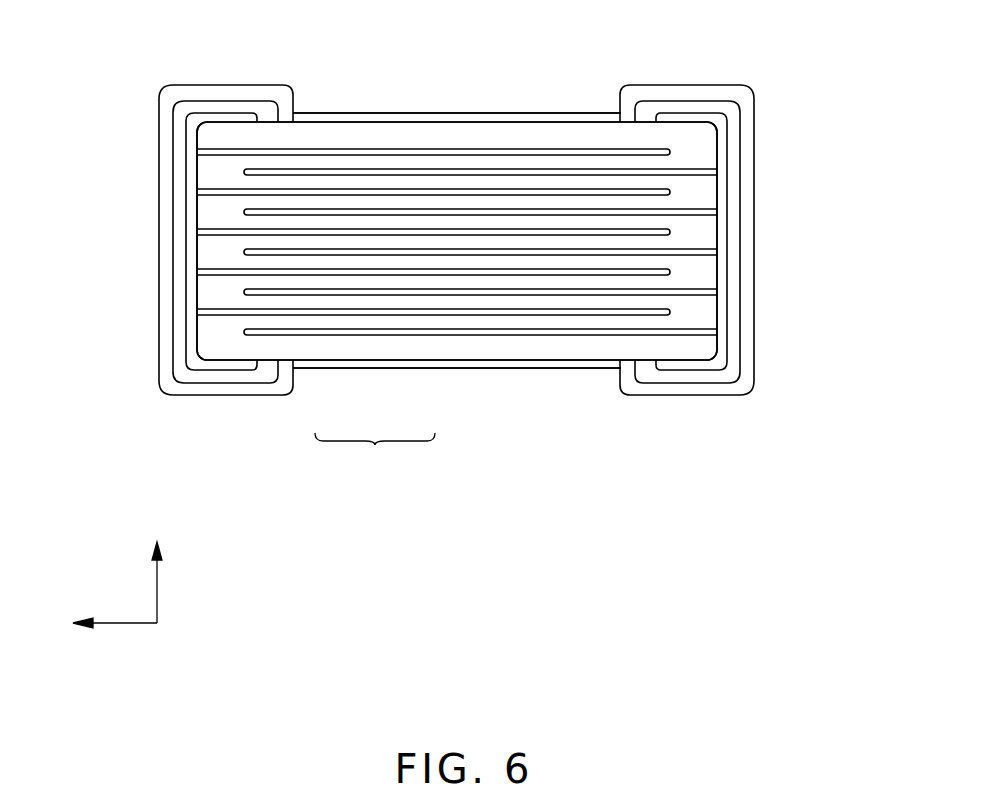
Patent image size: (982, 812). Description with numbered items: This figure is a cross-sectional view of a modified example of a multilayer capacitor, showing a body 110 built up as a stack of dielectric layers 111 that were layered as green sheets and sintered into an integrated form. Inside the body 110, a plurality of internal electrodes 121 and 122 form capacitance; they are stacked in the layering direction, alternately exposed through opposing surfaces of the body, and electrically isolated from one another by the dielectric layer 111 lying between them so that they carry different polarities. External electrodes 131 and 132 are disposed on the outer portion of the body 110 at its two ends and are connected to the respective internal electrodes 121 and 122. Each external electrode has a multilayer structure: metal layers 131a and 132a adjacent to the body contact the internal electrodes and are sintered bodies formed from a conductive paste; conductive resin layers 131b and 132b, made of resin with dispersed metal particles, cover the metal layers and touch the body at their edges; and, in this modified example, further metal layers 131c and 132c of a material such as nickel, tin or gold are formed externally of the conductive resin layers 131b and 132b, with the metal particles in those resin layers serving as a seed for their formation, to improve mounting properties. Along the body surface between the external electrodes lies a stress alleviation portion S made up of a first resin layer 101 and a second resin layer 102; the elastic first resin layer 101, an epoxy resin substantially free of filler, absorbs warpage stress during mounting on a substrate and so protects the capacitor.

The body 110 is at (449, 115).
The dielectric layer 111 is at (542, 183).
The internal electrode 121 is at (323, 149).
The internal electrode 122 is at (388, 168).
The first resin layer 101 is at (343, 362).
The second resin layer 102 is at (410, 370).
The stress alleviation portion S is at (375, 454).
The external electrode 131 is at (152, 240).
The metal layer 131a is at (67, 188).
The conductive resin layer 131b is at (178, 238).
The metal layer 131c is at (165, 199).
The external electrode 132 is at (444, 360).
The metal layer 132a is at (850, 188).
The conductive resin layer 132b is at (733, 240).
The metal layer 132c is at (747, 198).